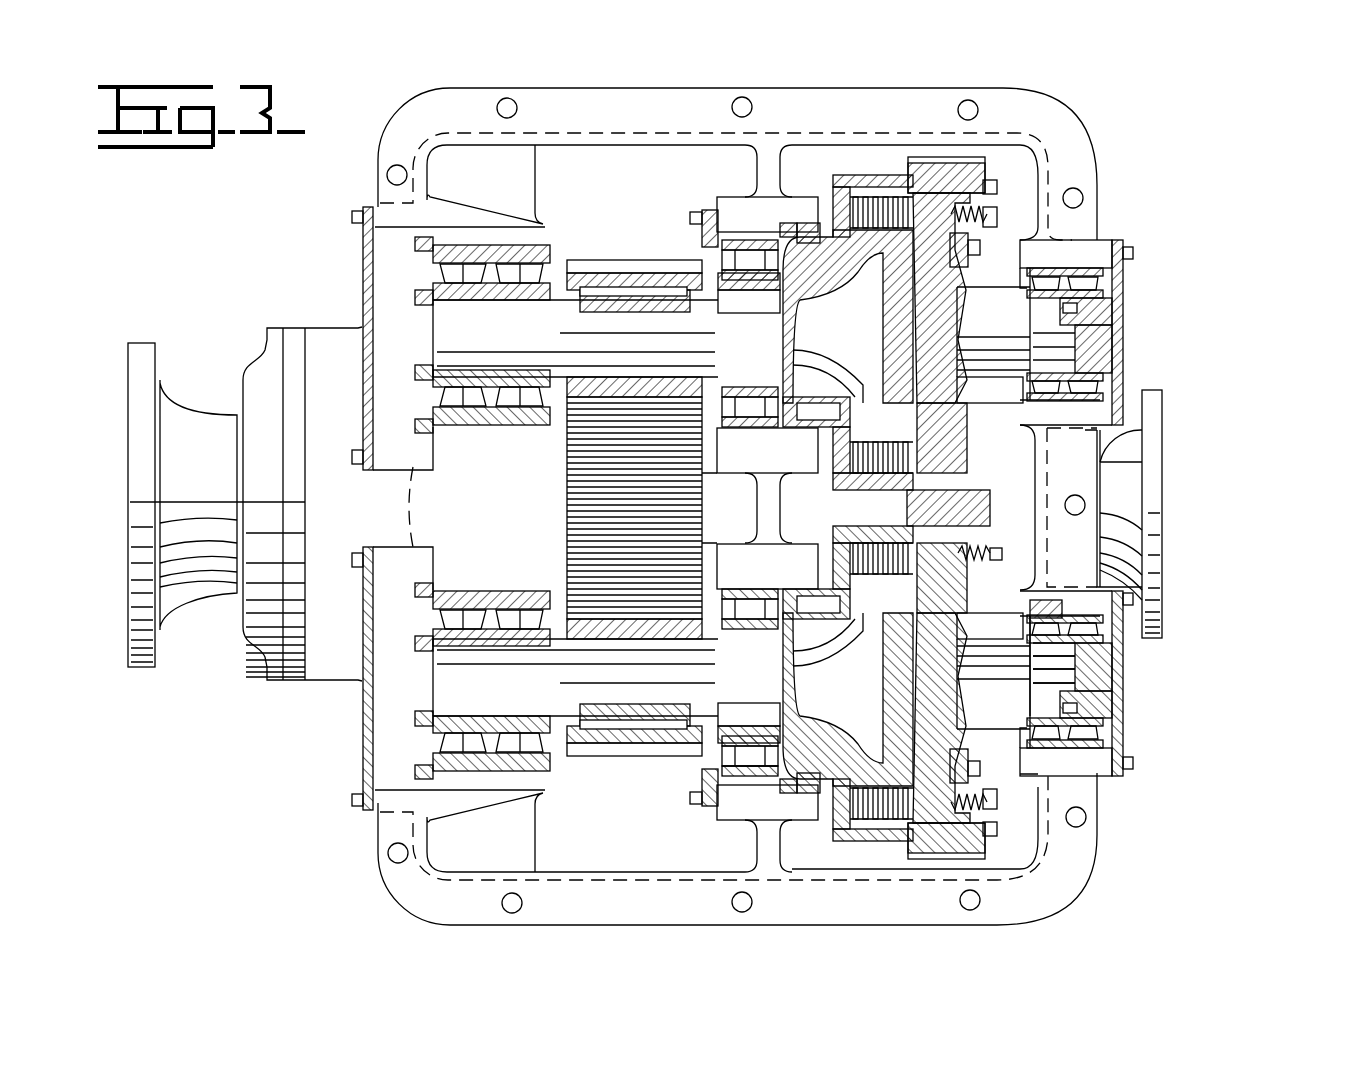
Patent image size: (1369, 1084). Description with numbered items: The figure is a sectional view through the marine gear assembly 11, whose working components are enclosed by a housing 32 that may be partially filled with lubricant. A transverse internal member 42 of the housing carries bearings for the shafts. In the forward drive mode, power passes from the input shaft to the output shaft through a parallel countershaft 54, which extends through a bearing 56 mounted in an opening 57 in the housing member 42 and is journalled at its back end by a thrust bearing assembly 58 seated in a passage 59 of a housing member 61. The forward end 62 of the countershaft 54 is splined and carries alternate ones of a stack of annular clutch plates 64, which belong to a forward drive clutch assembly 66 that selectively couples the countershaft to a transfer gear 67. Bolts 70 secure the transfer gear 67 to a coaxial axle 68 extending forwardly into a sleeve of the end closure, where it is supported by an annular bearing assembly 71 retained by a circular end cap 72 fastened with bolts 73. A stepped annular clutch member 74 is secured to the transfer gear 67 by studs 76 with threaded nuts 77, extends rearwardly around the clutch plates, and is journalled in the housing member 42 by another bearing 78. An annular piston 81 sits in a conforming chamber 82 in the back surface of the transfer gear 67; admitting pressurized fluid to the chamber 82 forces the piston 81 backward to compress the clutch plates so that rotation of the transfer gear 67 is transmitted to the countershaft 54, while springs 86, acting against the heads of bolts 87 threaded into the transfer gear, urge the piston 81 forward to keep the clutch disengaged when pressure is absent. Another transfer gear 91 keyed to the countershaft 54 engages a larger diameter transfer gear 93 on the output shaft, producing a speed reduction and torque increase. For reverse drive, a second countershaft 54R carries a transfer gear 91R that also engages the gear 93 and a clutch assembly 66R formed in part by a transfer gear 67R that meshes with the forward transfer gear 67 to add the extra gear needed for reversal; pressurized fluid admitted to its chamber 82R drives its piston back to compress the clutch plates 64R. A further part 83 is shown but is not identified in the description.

The marine gear assembly 11 is at (1232, 298).
The housing 32 is at (1095, 876).
The transverse internal member 42 is at (765, 505).
The countershaft 54 is at (555, 681).
The reverse countershaft 54R is at (570, 337).
The bearing 56 is at (717, 770).
The opening 57 is at (750, 773).
The thrust bearing assembly 58 is at (497, 773).
The passage 59 is at (493, 593).
The housing member 61 is at (527, 790).
The forward end of countershaft 62 is at (880, 640).
The clutch plates 64 is at (878, 773).
The reverse clutch plates 64R is at (880, 413).
The forward drive clutch assembly 66 is at (886, 845).
The reverse clutch assembly 66R is at (835, 168).
The transfer gear 67 is at (967, 858).
The reverse transfer gear 67R is at (937, 156).
The axle 68 is at (1026, 666).
The bolts 70 is at (1030, 620).
The annular bearing assembly 71 is at (1062, 752).
The circular end cap 72 is at (1113, 673).
The bolts 73 is at (1133, 599).
The stepped annular clutch member 74 is at (842, 838).
The studs 76 is at (863, 530).
The threaded nuts 77 is at (993, 527).
The bearing 78 is at (815, 780).
The annular piston 81 is at (963, 447).
The chamber 82 is at (962, 718).
The reverse chamber 82R is at (973, 330).
The backing plate 83 is at (893, 577).
The springs 86 is at (993, 557).
The bolts 87 is at (1007, 563).
The transfer gear 91 is at (630, 760).
The reverse transfer gear 91R is at (630, 262).
The output transfer gear 93 is at (587, 499).